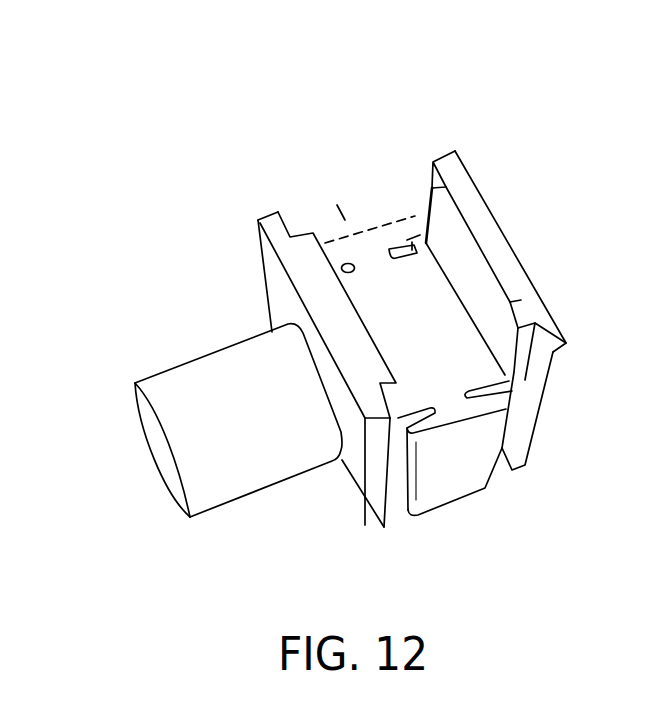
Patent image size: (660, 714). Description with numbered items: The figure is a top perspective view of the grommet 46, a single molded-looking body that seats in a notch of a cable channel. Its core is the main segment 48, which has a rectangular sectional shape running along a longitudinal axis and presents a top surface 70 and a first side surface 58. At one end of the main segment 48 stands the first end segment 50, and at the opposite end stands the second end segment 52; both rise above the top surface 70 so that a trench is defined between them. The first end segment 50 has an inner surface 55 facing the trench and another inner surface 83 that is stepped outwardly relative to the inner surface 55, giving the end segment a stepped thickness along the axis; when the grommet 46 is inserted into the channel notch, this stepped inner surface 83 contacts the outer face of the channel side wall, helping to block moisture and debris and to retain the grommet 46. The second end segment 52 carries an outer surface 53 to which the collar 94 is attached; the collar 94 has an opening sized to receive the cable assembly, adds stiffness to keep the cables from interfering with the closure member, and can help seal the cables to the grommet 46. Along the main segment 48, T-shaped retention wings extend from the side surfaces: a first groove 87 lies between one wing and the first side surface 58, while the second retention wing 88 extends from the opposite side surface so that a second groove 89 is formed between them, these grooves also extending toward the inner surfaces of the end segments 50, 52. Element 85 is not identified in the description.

The grommet 46 is at (177, 117).
The main segment 48 is at (381, 302).
The first end segment 50 is at (500, 265).
The second end segment 52 is at (280, 311).
The outer surface 53 is at (277, 300).
The inner surface 55 is at (493, 323).
The first side surface 58 is at (396, 468).
The top surface 70 is at (374, 270).
The inner surface 83 is at (533, 363).
The front tab plate 85 is at (458, 487).
The first groove 87 is at (398, 427).
The second retention wing 88 is at (372, 238).
The second groove 89 is at (344, 264).
The collar 94 is at (212, 497).